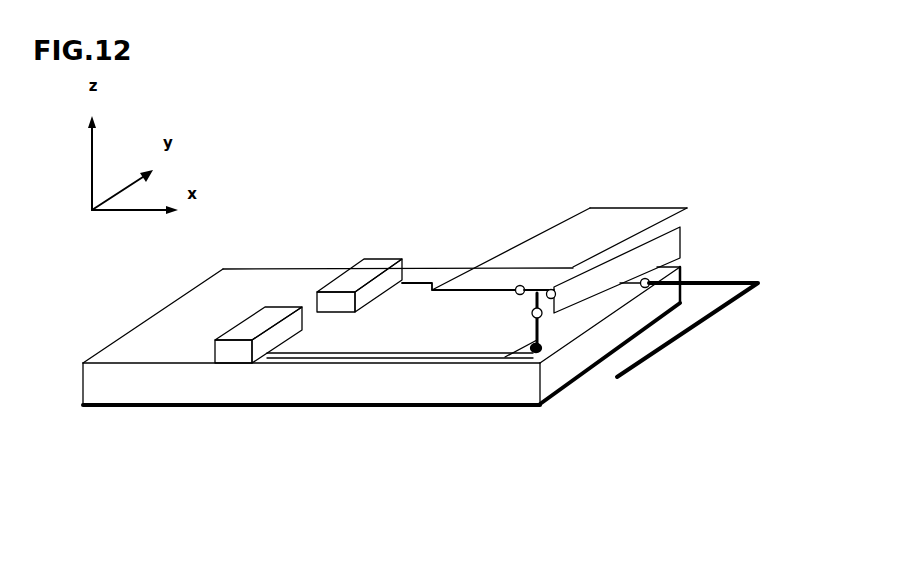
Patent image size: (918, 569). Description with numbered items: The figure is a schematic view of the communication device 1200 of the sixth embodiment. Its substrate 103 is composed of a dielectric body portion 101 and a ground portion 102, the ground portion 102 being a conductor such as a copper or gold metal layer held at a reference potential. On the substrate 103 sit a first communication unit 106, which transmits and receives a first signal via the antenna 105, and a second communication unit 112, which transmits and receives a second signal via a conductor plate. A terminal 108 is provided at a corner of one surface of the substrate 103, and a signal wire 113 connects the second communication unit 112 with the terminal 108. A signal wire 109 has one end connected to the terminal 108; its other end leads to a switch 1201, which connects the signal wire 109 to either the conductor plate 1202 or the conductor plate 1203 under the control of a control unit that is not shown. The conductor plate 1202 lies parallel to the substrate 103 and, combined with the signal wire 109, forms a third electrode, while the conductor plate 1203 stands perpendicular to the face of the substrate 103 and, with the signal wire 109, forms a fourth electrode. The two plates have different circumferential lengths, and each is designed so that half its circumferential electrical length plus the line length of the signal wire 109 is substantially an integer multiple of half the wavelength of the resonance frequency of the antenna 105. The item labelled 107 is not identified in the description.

The dielectric body portion 101 is at (100, 390).
The ground portion 102 is at (188, 412).
The substrate 103 is at (212, 469).
The antenna 105 is at (716, 283).
The first communication unit 106 is at (358, 280).
The wire 107 is at (415, 284).
The terminal 108 is at (540, 355).
The signal wire 109 is at (505, 357).
The second communication unit 112 is at (265, 322).
The signal wire 113 is at (395, 355).
The communication device 1200 is at (625, 99).
The switch 1201 is at (530, 302).
The conductor plate 1202 is at (537, 243).
The conductor plate 1203 is at (682, 242).